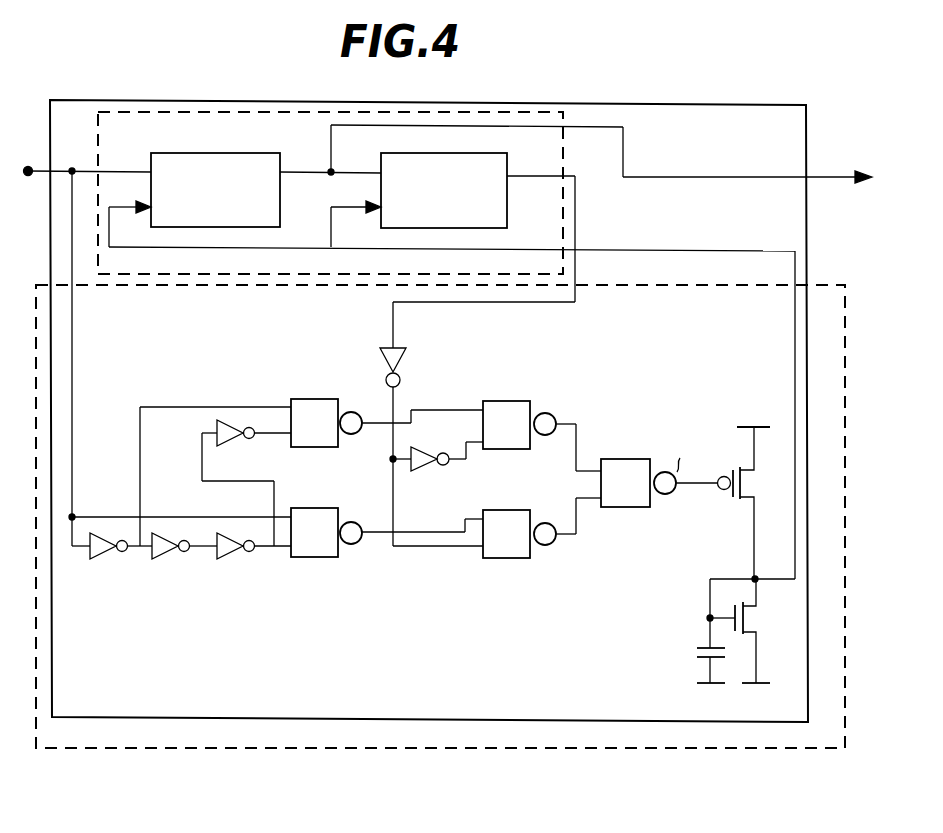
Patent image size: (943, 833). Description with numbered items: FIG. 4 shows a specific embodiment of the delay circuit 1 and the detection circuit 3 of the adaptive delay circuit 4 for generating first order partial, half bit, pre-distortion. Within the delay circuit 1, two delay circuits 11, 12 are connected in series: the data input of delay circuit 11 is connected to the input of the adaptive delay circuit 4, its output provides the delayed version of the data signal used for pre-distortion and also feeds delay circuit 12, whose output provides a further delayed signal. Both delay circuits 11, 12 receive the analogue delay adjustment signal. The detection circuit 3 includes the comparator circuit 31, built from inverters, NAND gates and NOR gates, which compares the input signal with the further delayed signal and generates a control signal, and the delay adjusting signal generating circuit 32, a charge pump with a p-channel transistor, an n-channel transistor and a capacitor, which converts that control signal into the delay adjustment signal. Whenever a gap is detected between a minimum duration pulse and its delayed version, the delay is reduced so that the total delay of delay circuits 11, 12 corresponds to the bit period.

The delay circuit 1 is at (147, 112).
The detection circuit 3 is at (817, 285).
The adaptive delay circuit 4 is at (783, 106).
The delay circuit 11 is at (203, 152).
The delay circuit 12 is at (490, 153).
The comparator circuit 31 is at (335, 623).
The delay adjusting signal generating circuit 32 is at (727, 552).